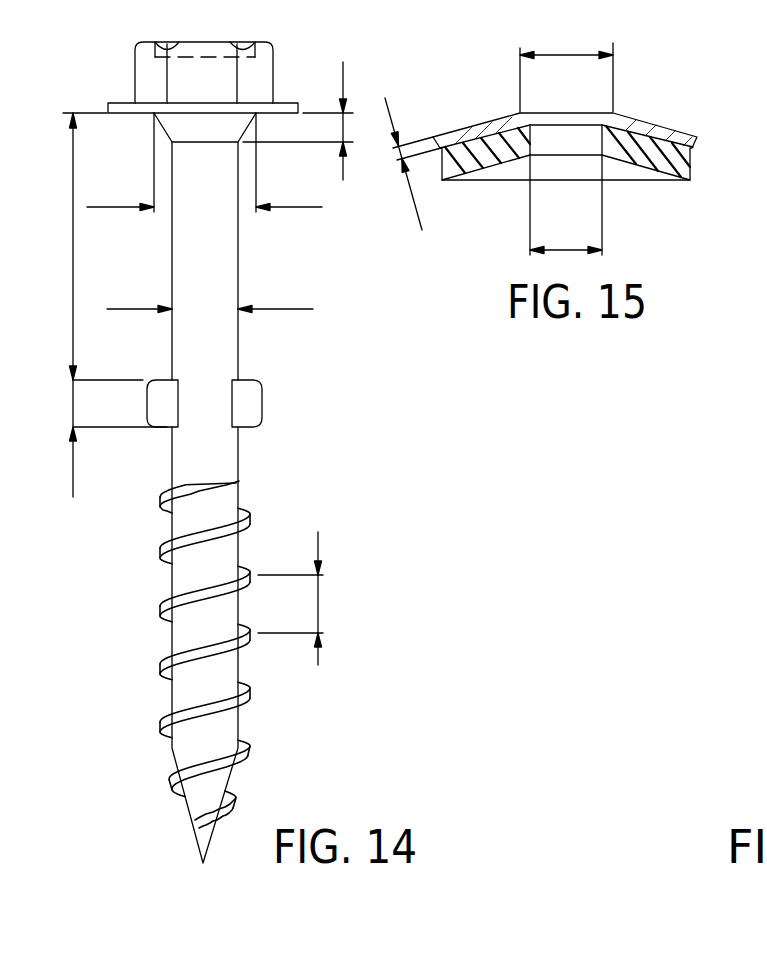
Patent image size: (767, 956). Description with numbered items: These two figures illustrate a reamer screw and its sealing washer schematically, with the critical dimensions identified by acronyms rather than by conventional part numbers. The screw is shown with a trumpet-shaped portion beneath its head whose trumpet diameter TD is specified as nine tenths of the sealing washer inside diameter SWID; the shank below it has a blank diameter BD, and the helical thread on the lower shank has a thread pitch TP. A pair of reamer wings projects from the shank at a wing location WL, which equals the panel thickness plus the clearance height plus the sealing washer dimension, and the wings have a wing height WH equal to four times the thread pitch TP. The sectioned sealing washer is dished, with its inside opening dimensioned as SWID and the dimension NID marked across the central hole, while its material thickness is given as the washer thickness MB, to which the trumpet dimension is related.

In FIG. 14, the wing location WL is at (76, 246).
In FIG. 14, the wing height WH is at (106, 438).
In FIG. 14, the trumpet diameter TD is at (204, 162).
In FIG. 14, the blank diameter BD is at (210, 297).
In FIG. 14, the thread pitch TP is at (290, 598).
In FIG. 15, the sealing washer inside diameter SWID is at (566, 68).
In FIG. 15, the neck inner diameter NID is at (566, 205).
In FIG. 15, the washer thickness MB is at (404, 164).